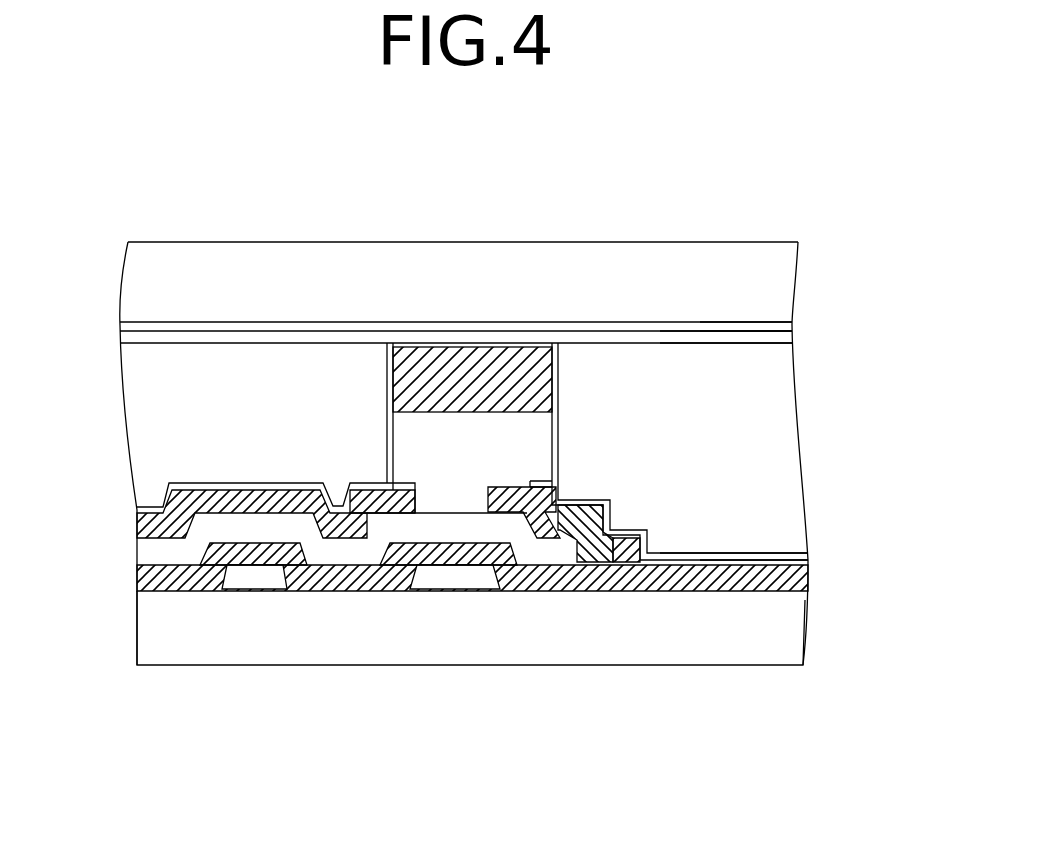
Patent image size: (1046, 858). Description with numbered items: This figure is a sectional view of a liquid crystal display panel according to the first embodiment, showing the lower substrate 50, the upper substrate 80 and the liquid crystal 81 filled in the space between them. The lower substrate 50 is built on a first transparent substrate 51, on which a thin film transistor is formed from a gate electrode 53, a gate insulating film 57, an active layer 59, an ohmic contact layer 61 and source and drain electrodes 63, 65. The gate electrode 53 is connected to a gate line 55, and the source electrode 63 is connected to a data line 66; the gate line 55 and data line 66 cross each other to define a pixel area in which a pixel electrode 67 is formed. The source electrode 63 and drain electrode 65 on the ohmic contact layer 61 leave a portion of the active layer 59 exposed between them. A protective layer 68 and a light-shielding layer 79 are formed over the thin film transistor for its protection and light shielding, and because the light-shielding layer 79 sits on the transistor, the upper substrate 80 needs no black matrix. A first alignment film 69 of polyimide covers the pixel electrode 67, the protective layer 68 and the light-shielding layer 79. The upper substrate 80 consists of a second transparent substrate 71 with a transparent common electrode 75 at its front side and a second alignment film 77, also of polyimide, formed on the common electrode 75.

The lower substrate 50 is at (109, 606).
The first transparent substrate 51 is at (130, 631).
The gate electrode 53 is at (457, 582).
The gate line 55 is at (257, 582).
The gate insulating film 57 is at (808, 570).
The active layer 59 is at (323, 552).
The ohmic contact layer 61 is at (552, 540).
The source electrode 63 is at (388, 557).
The drain electrode 65 is at (613, 562).
The data line 66 is at (137, 508).
The pixel electrode 67 is at (748, 560).
The protective layer 68 is at (542, 442).
The first alignment film 69 is at (695, 560).
The second transparent substrate 71 is at (603, 252).
The common electrode 75 is at (760, 327).
The second alignment film 77 is at (700, 338).
The light-shielding layer 79 is at (544, 380).
The upper substrate 80 is at (118, 316).
The liquid crystal 81 is at (693, 392).